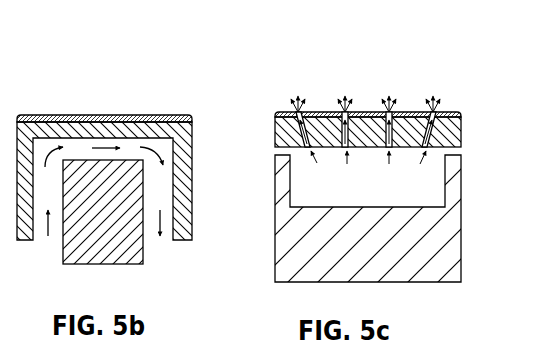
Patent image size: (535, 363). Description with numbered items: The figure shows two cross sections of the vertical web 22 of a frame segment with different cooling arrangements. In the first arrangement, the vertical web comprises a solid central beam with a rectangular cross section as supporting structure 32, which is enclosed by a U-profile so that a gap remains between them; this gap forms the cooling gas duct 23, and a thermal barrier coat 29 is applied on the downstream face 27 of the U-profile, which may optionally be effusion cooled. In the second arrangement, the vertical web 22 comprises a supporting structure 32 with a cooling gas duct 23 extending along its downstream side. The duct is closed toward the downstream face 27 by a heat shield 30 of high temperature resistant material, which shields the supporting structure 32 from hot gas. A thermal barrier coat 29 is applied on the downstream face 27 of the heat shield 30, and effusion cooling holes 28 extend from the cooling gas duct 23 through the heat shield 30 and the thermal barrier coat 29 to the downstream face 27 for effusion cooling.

In FIG. 5b, the vertical web 22 is at (130, 148).
In FIG. 5c, the vertical web 22 is at (372, 144).
In FIG. 5b, the cooling gas duct 23 is at (160, 190).
In FIG. 5c, the cooling gas duct 23 is at (325, 187).
In FIG. 5b, the downstream face 27 is at (70, 112).
In FIG. 5c, the downstream face 27 is at (330, 110).
In FIG. 5c, the effusion cooling holes 28 is at (432, 118).
In FIG. 5b, the thermal barrier coat 29 is at (155, 118).
In FIG. 5c, the thermal barrier coat 29 is at (378, 81).
In FIG. 5c, the heat shield 30 is at (445, 133).
In FIG. 5b, the supporting structure 32 is at (128, 243).
In FIG. 5c, the supporting structure 32 is at (237, 261).